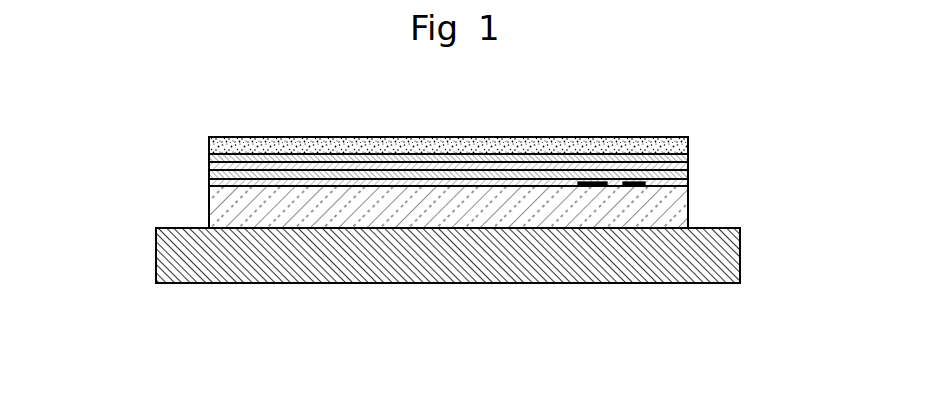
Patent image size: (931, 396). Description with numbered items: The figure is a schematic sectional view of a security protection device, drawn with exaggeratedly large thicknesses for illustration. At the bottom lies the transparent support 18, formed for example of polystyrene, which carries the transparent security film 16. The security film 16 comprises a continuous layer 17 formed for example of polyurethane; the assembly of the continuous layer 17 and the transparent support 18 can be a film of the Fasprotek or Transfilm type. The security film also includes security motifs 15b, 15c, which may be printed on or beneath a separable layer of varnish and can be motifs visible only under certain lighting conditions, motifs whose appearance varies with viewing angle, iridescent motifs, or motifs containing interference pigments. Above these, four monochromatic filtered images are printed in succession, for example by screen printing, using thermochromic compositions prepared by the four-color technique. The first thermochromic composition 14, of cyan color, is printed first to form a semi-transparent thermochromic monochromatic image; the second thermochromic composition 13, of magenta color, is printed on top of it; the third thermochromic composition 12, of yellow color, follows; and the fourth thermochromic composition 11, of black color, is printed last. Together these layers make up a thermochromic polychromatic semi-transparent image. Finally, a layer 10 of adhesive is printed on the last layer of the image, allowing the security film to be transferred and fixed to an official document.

The layer of adhesive 10 is at (527, 137).
The fourth thermochromic composition 11 is at (658, 138).
The third thermochromic composition 12 is at (655, 158).
The second thermochromic composition 13 is at (665, 176).
The first thermochromic composition 14 is at (670, 182).
The security motif 15b is at (595, 186).
The security motif 15c is at (635, 186).
The transparent security film 16 is at (201, 153).
The continuous layer 17 is at (667, 217).
The transparent support 18 is at (170, 253).